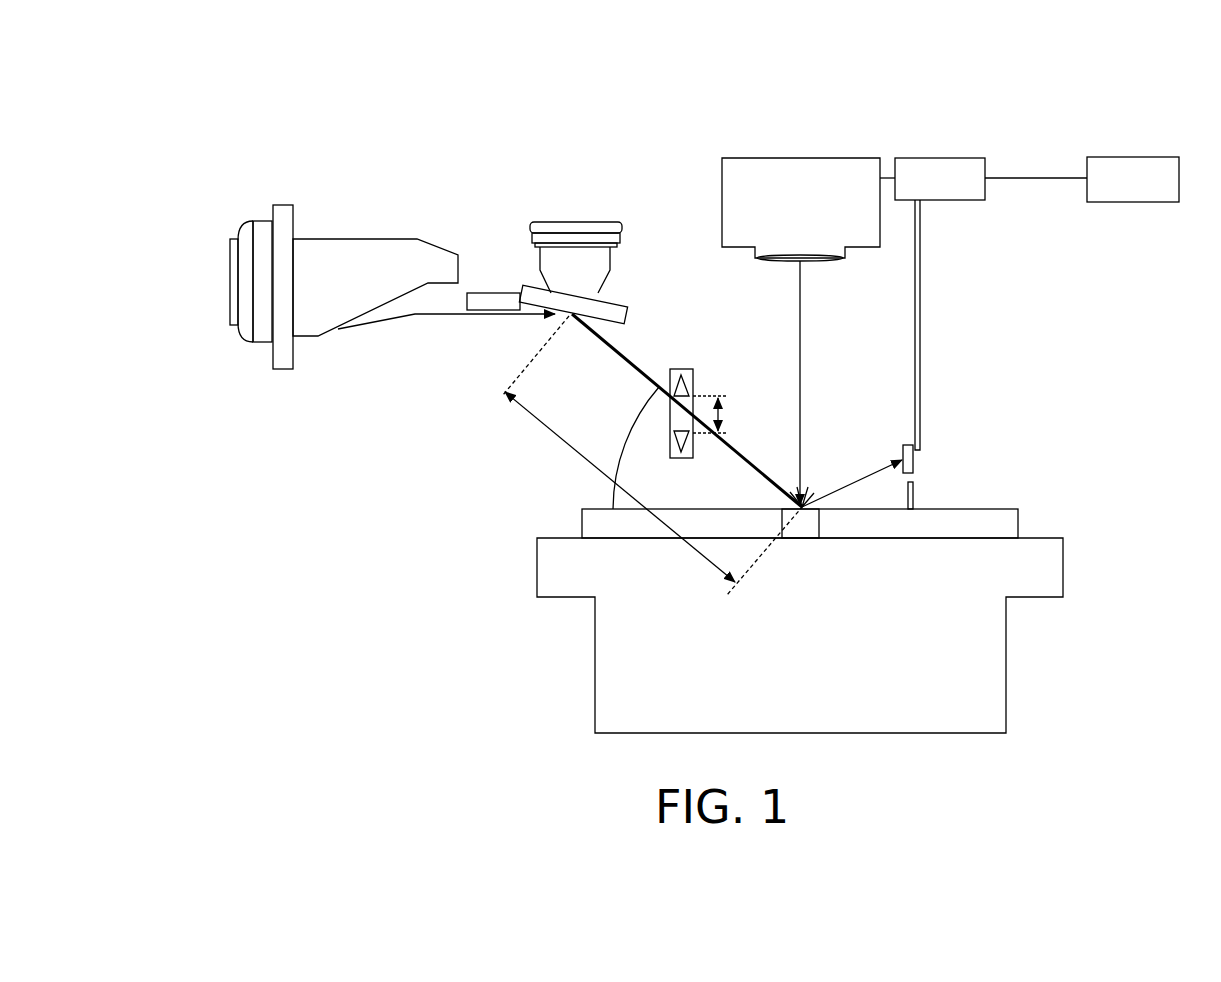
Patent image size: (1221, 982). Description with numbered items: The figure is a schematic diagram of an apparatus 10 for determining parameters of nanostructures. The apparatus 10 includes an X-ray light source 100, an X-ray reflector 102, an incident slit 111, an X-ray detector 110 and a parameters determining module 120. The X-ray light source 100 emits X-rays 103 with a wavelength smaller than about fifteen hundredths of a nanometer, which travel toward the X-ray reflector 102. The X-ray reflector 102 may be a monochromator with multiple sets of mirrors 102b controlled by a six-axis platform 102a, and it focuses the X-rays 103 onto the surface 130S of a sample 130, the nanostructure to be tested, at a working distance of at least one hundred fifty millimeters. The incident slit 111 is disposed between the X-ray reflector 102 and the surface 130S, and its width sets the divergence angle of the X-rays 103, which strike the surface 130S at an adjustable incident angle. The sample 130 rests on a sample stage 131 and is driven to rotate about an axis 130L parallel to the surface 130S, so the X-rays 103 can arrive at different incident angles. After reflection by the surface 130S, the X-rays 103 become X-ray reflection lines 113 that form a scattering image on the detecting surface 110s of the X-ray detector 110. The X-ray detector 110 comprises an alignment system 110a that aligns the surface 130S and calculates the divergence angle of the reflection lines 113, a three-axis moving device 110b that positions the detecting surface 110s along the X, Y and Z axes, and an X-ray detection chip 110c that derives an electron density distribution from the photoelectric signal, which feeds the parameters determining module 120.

The apparatus for determining parameters of nanostructures 10 is at (157, 69).
The X-ray light source 100 is at (358, 284).
The X-ray reflector 102 is at (625, 209).
The six-axis platform 102a is at (613, 259).
The mirrors 102b is at (627, 302).
The X-rays 103 is at (749, 468).
The incident slit 111 is at (683, 369).
The X-ray detector 110 is at (200, 483).
The alignment system 110a is at (830, 216).
The three-axis moving device 110b is at (921, 324).
The X-ray detection chip 110c is at (968, 193).
The detecting surface 110s is at (899, 451).
The parameters determining module 120 is at (1155, 192).
The sample 130 is at (797, 520).
The axis 130L is at (801, 305).
The surface 130S is at (812, 500).
The X-ray reflection lines 113 is at (850, 483).
The sample stage 131 is at (1005, 565).